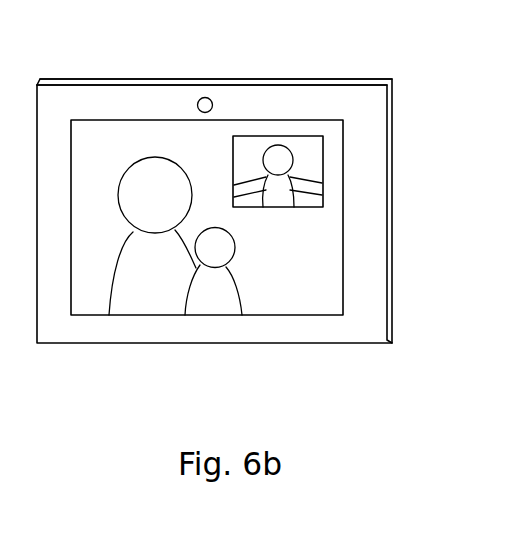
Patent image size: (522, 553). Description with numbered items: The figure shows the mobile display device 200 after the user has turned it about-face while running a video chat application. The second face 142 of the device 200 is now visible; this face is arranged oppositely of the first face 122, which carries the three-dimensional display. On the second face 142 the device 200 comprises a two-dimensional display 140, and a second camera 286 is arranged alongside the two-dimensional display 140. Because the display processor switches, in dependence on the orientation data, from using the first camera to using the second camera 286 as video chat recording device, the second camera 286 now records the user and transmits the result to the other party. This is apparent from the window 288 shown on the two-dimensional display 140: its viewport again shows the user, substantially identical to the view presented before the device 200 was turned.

The device 200 is at (88, 56).
The first face 122 is at (253, 79).
The second face 142 is at (168, 107).
The second camera 286 is at (222, 107).
The 2D display 140 is at (296, 316).
The window 288 is at (273, 208).